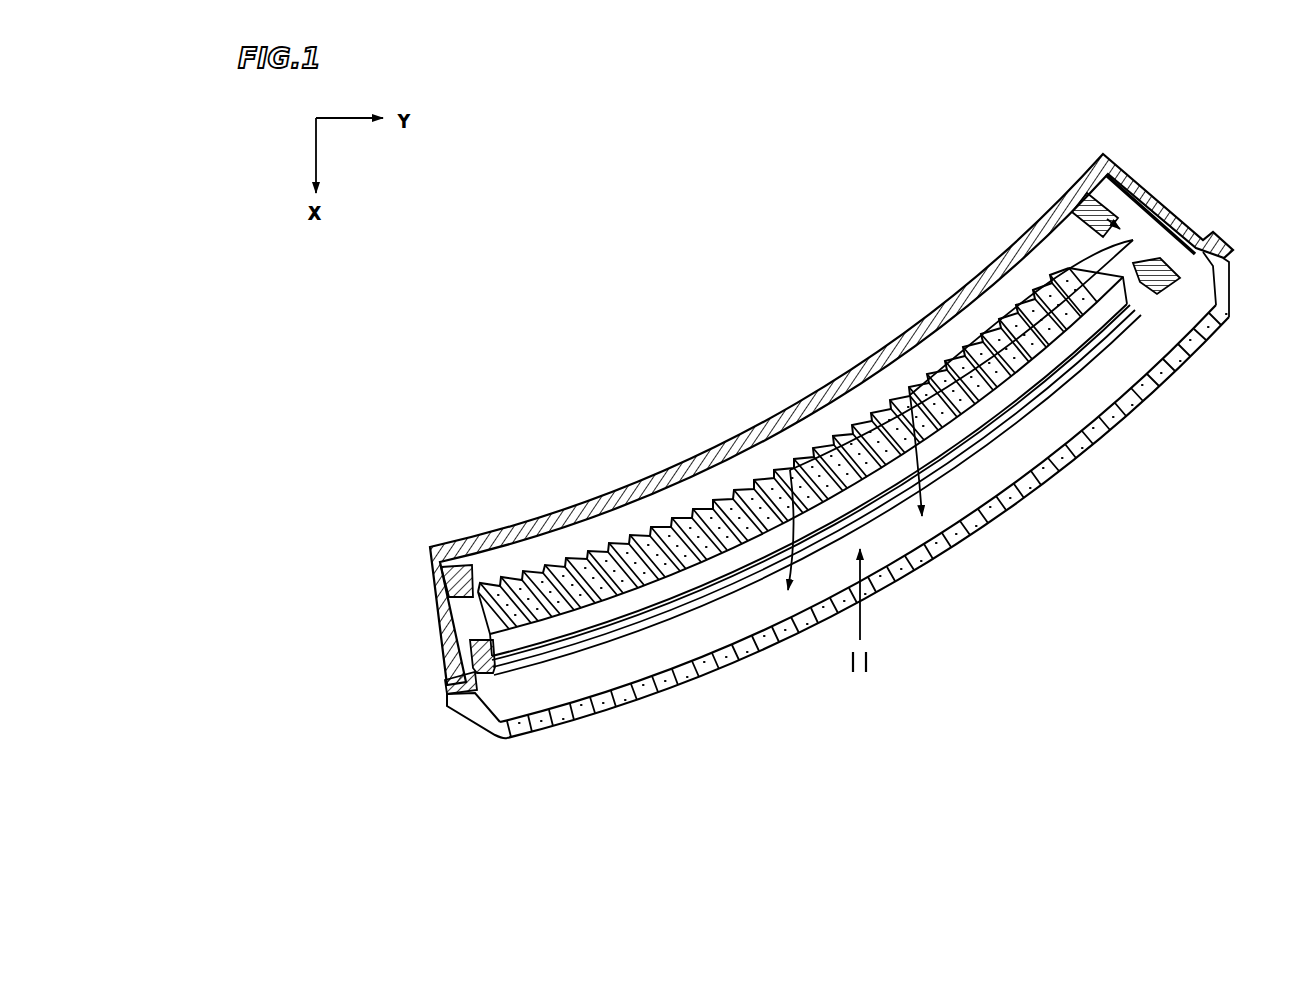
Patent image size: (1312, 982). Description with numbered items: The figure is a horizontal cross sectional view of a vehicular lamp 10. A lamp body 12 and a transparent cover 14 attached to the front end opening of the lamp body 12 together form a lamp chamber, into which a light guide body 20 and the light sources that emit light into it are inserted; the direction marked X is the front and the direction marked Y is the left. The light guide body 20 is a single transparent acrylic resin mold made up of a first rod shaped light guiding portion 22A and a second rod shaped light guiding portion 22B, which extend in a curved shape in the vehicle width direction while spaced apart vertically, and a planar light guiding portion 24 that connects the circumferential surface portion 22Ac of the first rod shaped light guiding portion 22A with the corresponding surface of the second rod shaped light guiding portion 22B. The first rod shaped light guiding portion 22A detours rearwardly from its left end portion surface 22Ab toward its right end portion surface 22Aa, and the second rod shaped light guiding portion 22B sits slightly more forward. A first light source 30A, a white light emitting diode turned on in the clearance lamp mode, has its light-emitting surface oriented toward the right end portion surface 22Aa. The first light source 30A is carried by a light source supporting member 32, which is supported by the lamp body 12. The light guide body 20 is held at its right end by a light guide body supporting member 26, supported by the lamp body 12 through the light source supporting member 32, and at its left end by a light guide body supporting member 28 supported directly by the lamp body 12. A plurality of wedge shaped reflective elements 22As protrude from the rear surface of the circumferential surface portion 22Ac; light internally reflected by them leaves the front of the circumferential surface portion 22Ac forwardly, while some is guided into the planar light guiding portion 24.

The vehicular lamp 10 is at (651, 231).
The lamp body 12 is at (943, 298).
The transparent cover 14 is at (1079, 464).
The light guide body 20 is at (959, 473).
The first rod shaped light guiding portion 22A is at (668, 546).
The right end portion surface 22Aa is at (1078, 247).
The left end portion surface 22Ab is at (473, 612).
The circumferential surface portion 22Ac is at (578, 611).
The reflective elements 22As is at (908, 392).
The second rod shaped light guiding portion 22B is at (662, 610).
The planar light guiding portion 24 is at (733, 563).
The light guide body supporting member 26 is at (1156, 296).
The light guide body supporting member 28 is at (488, 678).
The first light source 30A is at (1096, 209).
The light source supporting member 32 is at (1233, 312).